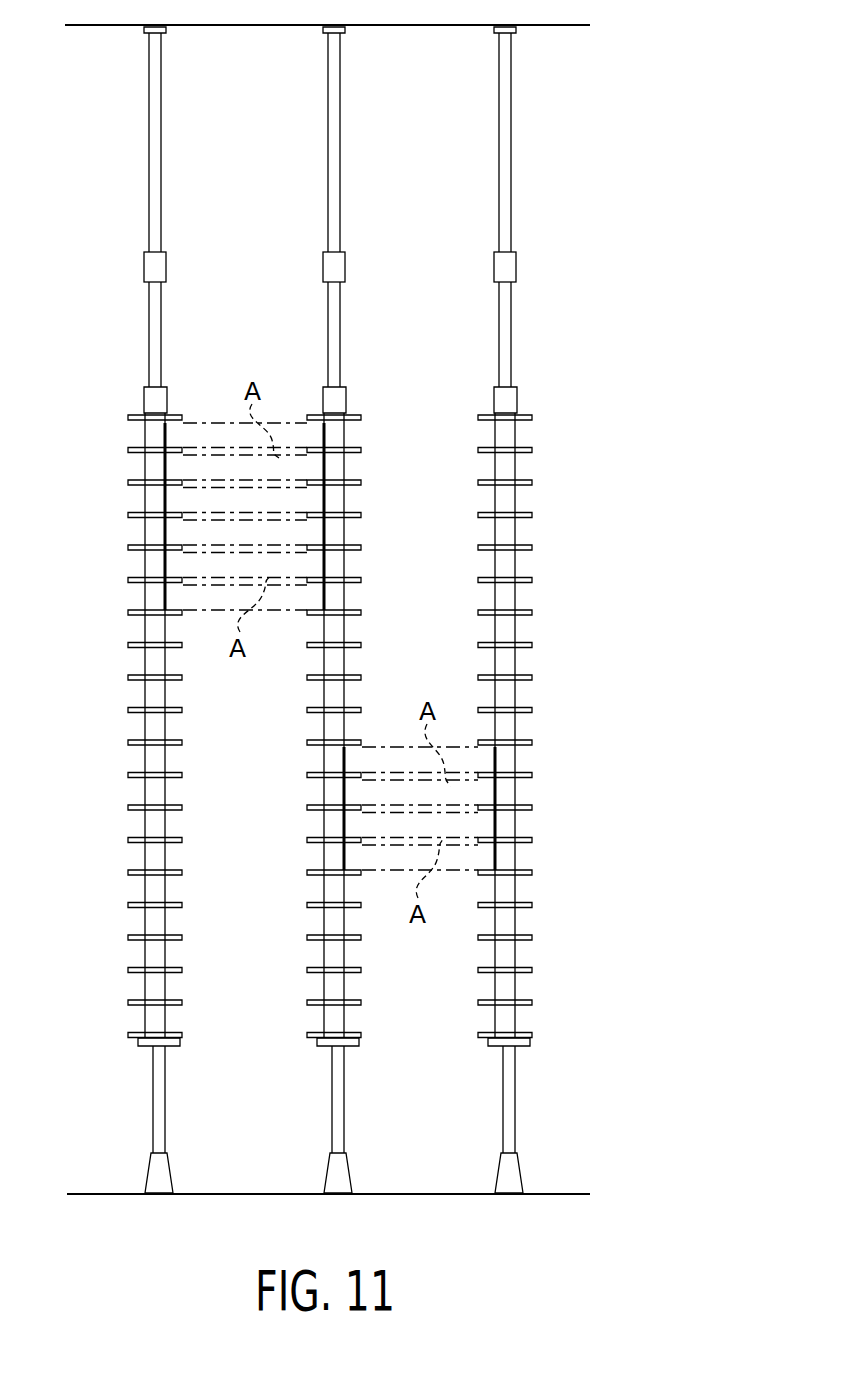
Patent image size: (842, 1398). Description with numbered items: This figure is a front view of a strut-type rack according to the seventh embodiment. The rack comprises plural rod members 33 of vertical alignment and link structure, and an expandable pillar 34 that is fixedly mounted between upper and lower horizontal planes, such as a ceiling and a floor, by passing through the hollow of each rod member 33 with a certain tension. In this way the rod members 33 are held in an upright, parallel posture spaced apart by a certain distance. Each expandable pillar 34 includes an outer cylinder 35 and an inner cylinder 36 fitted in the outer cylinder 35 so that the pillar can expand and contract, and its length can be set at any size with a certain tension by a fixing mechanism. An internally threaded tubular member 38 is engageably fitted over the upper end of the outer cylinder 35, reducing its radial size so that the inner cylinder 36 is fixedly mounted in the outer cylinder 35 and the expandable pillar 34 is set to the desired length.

The rod member 33 is at (118, 743).
The expandable pillar 34 is at (134, 362).
The outer cylinder 35 is at (148, 300).
The inner cylinder 36 is at (148, 96).
The internally threaded tubular member 38 is at (144, 262).